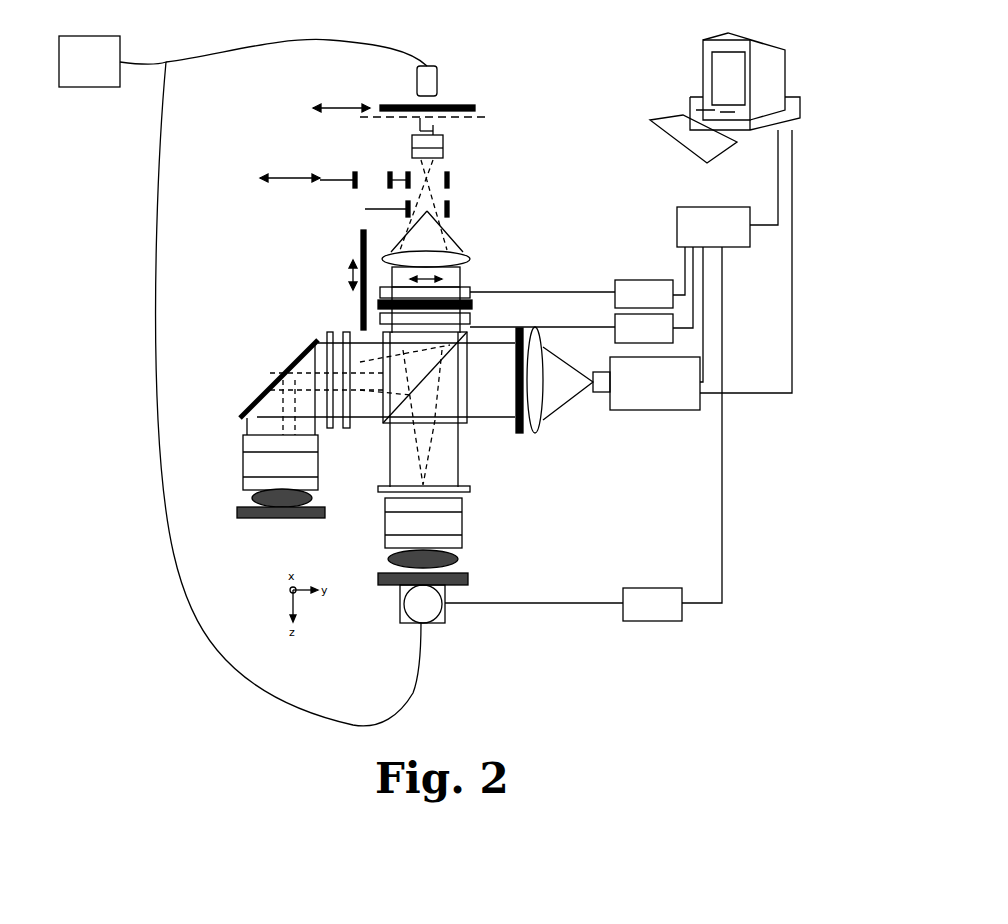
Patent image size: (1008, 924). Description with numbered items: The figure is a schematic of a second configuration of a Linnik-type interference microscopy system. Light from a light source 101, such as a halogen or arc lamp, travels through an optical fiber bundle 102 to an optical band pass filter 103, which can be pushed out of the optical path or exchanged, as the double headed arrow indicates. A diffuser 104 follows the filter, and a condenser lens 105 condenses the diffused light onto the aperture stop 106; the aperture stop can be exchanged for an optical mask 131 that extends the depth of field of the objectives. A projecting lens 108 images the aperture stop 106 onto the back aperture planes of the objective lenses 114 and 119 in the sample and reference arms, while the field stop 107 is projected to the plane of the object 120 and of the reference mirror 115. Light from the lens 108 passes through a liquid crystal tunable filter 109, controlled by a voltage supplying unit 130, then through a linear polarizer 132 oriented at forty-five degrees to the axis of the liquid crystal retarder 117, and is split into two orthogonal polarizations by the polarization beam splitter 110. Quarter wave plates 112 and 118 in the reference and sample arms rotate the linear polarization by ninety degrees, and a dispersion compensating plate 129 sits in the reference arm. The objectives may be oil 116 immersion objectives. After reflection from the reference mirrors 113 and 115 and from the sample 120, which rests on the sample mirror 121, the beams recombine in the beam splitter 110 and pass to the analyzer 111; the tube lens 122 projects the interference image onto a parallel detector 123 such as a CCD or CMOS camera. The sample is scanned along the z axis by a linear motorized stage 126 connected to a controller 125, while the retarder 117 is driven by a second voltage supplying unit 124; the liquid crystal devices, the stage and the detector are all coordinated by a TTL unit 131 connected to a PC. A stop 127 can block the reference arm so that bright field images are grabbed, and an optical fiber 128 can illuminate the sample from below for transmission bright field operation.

The light source 101 is at (89, 61).
The optical fiber bundle 102 is at (273, 43).
The optical band pass filter 103 is at (394, 89).
The diffuser 104 is at (487, 117).
The condenser lens 105 is at (468, 147).
The aperture stop 106 is at (449, 180).
The field stop 107 is at (449, 209).
The projecting lens 108 is at (436, 250).
The liquid crystal tunable filter 109 is at (451, 278).
The polarization beam splitter 110 is at (429, 409).
The analyzer 111 is at (491, 380).
The quarter wave plate 112 is at (330, 369).
The reference mirror 113 is at (304, 387).
The objective lens 114 is at (260, 462).
The reference mirror 115 is at (257, 515).
The oil 116 is at (375, 526).
The liquid crystal retarder 117 is at (450, 315).
The quarter wave plate 118 is at (480, 489).
The objective lens 119 is at (452, 523).
The sample 120 is at (403, 565).
The sample mirror 121 is at (444, 580).
The tube lens 122 is at (554, 393).
The parallel detector 123 is at (646, 383).
The second voltage supplying unit 124 is at (644, 328).
The controller 125 is at (652, 604).
The linear motorized stage 126 is at (511, 604).
The stop 127 is at (343, 279).
The optical fiber 128 is at (288, 394).
The dispersion compensating plate 129 is at (346, 395).
The voltage supplying unit 130 is at (644, 294).
The TTL unit 131 is at (552, 200).
The linear polarizer 132 is at (470, 304).